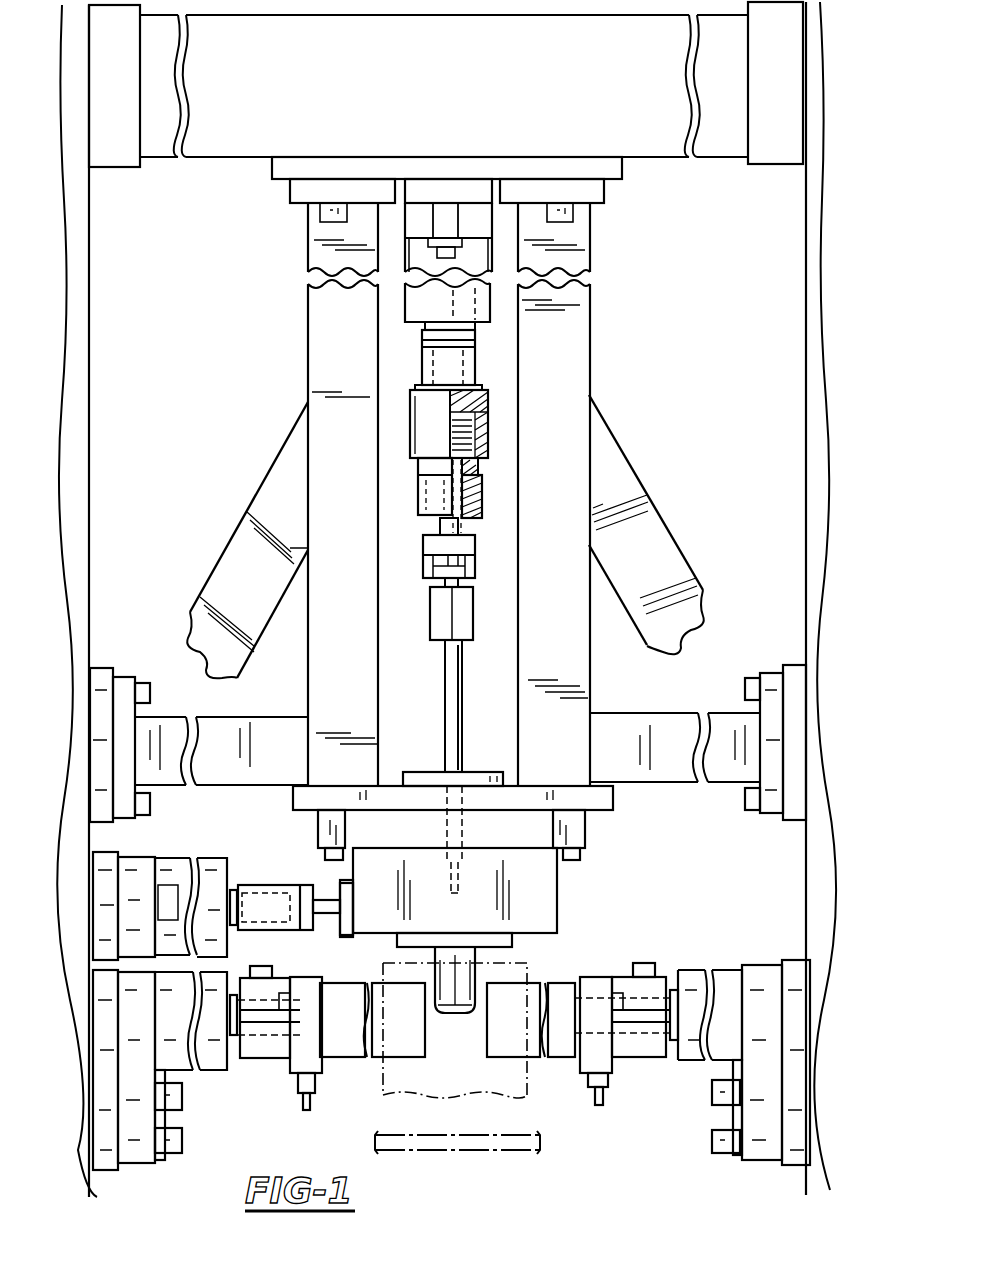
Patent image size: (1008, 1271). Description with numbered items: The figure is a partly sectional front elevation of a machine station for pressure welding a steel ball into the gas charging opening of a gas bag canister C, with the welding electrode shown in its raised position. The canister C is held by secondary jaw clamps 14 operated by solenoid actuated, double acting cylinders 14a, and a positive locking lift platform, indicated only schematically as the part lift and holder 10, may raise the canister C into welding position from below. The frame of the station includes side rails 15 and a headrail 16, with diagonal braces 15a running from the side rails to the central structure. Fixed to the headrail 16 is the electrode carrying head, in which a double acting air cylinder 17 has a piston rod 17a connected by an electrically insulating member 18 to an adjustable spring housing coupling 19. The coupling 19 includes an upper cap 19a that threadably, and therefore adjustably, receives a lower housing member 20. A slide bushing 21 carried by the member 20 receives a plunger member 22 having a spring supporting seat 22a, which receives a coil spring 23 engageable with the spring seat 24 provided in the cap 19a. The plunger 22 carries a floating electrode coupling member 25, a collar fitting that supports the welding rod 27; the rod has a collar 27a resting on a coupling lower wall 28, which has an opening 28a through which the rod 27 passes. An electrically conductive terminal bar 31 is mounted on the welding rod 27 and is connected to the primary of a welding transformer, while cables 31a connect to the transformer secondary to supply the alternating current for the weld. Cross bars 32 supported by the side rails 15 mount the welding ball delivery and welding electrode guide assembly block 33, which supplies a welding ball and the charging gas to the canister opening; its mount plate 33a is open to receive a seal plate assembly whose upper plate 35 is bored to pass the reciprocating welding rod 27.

The part lift and holder 10 is at (500, 1155).
The secondary jaw clamps 14 is at (397, 288).
The double acting cylinders 14a is at (212, 1070).
The side rails 15 is at (78, 380).
The diagonal brace 15a is at (318, 683).
The headrail 16 is at (272, 106).
The double acting air cylinder 17 is at (408, 315).
The piston rod 17a is at (468, 365).
The electrically insulating member 18 is at (470, 377).
The adjustable spring housing coupling 19 is at (498, 440).
The upper cap 19a is at (487, 393).
The lower housing member 20 is at (432, 503).
The slide bushing 21 is at (484, 511).
The plunger member 22 is at (472, 529).
The spring supporting seat 22a is at (454, 471).
The coil spring 23 is at (464, 436).
The spring seat 24 is at (454, 415).
The floating electrode coupling member 25 is at (478, 565).
The welding rod 27 is at (462, 682).
The collar 27a is at (434, 561).
The coupling lower wall 28 is at (478, 577).
The opening 28a is at (428, 572).
The electrically conductive terminal bar 31 is at (436, 625).
The cables 31a is at (310, 1100).
The cross bars 32 is at (657, 721).
The welding ball delivery and welding electrode guide assembly block 33 is at (545, 902).
The mount plate 33a is at (612, 808).
The upper plate 35 is at (480, 770).
The gas bag canister C is at (527, 1070).